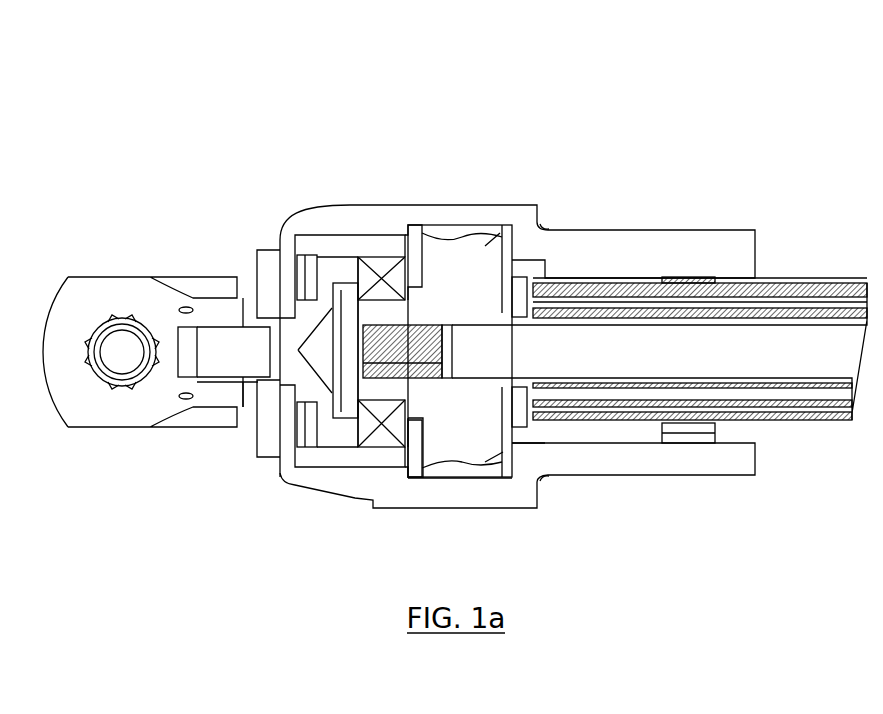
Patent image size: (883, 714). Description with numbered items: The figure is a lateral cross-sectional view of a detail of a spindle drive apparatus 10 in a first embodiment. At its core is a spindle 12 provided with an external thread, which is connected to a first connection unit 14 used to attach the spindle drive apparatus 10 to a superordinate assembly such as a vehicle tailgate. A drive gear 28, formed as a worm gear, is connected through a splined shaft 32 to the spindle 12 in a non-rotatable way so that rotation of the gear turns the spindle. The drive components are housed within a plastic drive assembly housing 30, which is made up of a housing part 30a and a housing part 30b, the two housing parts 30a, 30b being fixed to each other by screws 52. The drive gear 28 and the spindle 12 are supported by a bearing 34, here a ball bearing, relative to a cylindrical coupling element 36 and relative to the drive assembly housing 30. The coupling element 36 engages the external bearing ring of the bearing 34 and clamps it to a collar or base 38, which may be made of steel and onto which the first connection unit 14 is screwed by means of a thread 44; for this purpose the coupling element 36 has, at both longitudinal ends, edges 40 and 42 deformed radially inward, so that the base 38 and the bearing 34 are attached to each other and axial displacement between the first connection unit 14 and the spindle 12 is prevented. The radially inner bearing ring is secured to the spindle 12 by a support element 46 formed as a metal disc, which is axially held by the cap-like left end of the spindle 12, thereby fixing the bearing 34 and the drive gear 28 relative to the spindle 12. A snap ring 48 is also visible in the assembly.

The spindle drive apparatus 10 is at (789, 140).
The spindle 12 is at (790, 343).
The first connection unit 14 is at (105, 288).
The drive gear 28 is at (493, 237).
The drive assembly housing 30 is at (728, 243).
The housing part 30a is at (453, 492).
The housing part 30b is at (518, 492).
The splined shaft 32 is at (410, 363).
The bearing 34 is at (382, 263).
The coupling element 36 is at (328, 242).
The base 38 is at (270, 343).
The edge 40 is at (410, 252).
The edge 42 is at (307, 252).
The thread 44 is at (213, 375).
The support element 46 is at (345, 307).
The snap ring 48 is at (352, 250).
The screws 52 is at (552, 223).